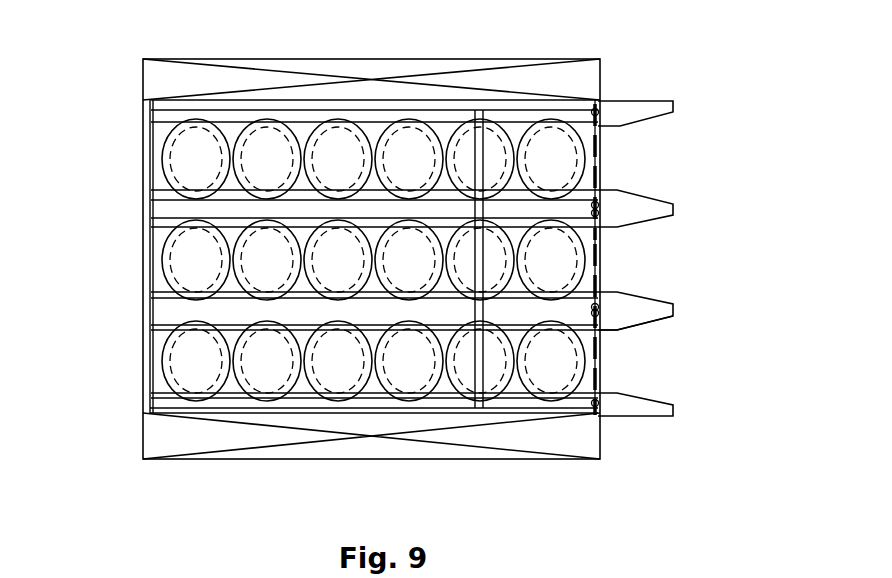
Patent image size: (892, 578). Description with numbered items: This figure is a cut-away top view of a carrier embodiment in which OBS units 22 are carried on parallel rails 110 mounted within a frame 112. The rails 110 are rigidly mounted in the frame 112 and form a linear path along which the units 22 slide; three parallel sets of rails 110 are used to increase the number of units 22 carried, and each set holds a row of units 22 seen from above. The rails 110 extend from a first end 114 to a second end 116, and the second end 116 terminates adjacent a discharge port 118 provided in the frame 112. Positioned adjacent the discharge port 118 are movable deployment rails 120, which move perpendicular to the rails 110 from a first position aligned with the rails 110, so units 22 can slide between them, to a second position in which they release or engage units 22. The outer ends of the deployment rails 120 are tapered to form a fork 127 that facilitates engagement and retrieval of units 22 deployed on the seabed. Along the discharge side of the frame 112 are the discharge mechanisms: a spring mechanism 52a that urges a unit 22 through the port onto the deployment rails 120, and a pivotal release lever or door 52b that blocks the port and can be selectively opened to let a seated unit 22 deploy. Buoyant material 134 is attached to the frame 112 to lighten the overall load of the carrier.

The OBS unit 22 is at (333, 370).
The spring mechanism 52a is at (507, 237).
The pivotal release lever or door 52b is at (598, 272).
The rails 110 is at (382, 125).
The frame 112 is at (141, 376).
The first end 114 is at (162, 402).
The second end 116 is at (478, 412).
The discharge port 118 is at (521, 410).
The deployment rails 120 is at (664, 220).
The fork 127 is at (657, 322).
The buoyant material 134 is at (283, 59).